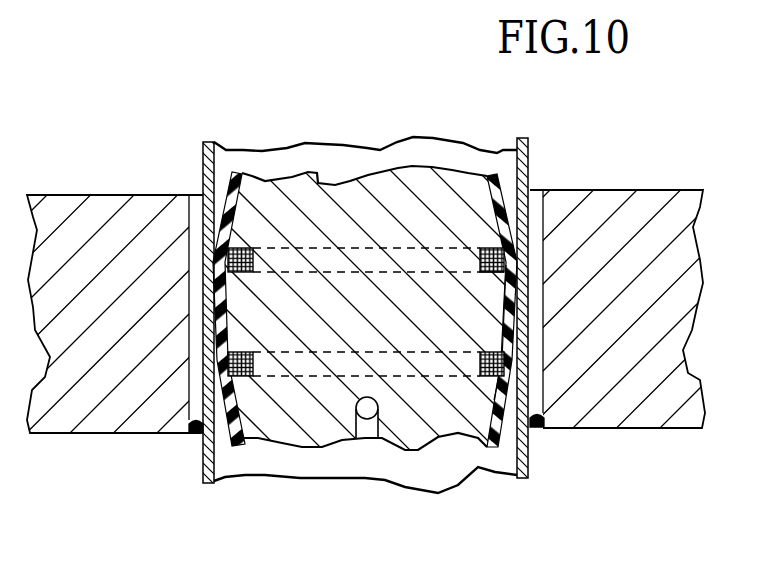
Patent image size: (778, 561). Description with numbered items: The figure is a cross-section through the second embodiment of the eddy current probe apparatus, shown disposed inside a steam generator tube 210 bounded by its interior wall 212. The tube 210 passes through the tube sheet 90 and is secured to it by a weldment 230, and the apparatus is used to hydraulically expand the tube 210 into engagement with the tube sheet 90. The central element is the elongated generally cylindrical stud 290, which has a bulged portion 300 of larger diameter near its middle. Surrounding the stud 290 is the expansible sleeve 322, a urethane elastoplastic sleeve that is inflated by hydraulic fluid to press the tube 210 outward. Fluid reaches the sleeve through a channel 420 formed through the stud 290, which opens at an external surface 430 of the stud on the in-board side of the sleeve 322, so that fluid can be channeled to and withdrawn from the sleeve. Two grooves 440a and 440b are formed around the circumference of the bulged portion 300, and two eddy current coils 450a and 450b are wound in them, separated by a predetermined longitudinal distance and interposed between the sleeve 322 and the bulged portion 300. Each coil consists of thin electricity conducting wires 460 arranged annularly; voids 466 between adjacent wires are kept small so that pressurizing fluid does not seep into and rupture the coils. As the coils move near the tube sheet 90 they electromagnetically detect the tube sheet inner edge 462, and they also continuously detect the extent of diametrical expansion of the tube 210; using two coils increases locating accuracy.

The tube sheet 90 is at (672, 208).
The steam generator tube 210 is at (528, 151).
The interior wall 212 is at (223, 143).
The weldment 230 is at (196, 433).
The stud 290 is at (251, 193).
The bulged portion 300 is at (368, 190).
The expansible sleeve 322 is at (497, 186).
The channel 420 is at (368, 440).
The external surface 430 is at (503, 388).
The groove 440a is at (317, 250).
The groove 440b is at (320, 354).
The eddy current coil 450a is at (482, 248).
The eddy current coil 450b is at (486, 352).
The electricity conducting wires 460 is at (490, 274).
The tube sheet inner edge 462 is at (226, 175).
The voids 466 is at (238, 275).